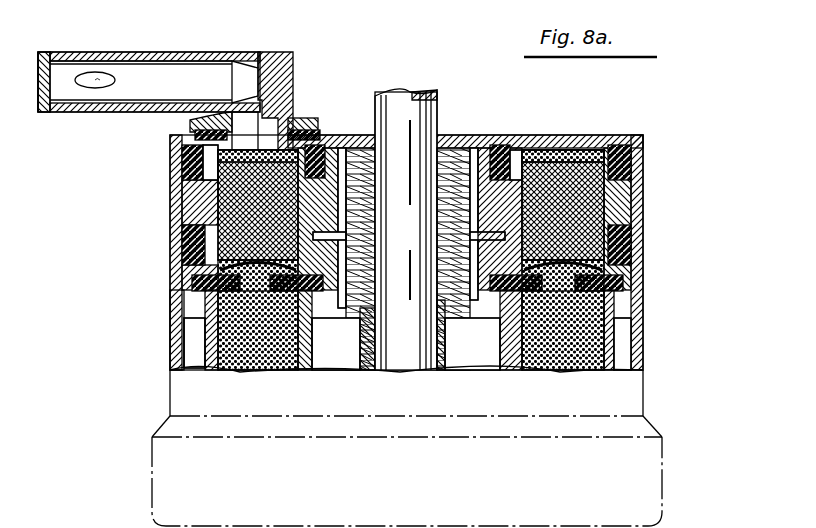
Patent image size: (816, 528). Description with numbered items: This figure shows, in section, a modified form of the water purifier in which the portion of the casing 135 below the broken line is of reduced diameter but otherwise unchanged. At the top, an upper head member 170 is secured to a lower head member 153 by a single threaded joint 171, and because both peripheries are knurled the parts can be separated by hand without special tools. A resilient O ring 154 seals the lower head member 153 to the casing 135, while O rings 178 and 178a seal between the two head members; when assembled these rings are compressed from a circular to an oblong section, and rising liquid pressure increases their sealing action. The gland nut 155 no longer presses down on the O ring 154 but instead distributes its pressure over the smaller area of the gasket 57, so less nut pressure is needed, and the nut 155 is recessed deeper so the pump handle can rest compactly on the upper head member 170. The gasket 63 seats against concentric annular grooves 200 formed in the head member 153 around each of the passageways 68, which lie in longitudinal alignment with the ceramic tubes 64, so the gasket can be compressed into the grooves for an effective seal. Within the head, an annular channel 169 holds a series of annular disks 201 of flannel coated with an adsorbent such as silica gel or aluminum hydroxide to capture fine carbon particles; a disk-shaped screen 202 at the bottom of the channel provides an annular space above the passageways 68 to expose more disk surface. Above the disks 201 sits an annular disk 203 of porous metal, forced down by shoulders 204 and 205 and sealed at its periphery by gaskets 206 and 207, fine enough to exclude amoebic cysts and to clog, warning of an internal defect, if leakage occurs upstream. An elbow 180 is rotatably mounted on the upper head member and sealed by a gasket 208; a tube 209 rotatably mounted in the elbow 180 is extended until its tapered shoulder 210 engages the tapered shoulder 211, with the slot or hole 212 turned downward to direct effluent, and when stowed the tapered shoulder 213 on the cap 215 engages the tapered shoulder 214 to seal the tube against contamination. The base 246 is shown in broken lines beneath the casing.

The gasket 57 is at (345, 310).
The gasket 63 is at (192, 338).
The ceramic tubes 64 is at (508, 338).
The passageways 68 is at (256, 290).
The casing 135 is at (641, 362).
The lower head member 153 is at (175, 206).
The resilient O ring 154 is at (182, 258).
The gland nut 155 is at (342, 145).
The annular channel 169 is at (640, 212).
The upper head member 170 is at (178, 162).
The threaded joint 171 is at (476, 145).
The O ring 178 is at (178, 182).
The O ring 178a is at (320, 135).
The elbow 180 is at (150, 55).
The concentric annular grooves 200 is at (643, 276).
The annular disks 201 is at (640, 226).
The disk-shaped screen 202 is at (175, 318).
The annular disk of porous metal 203 is at (565, 150).
The shoulder 204 is at (535, 126).
The shoulder 205 is at (590, 150).
The gasket 206 is at (528, 192).
The gasket 207 is at (594, 218).
The gasket 208 is at (192, 130).
The tube 209 is at (178, 85).
The tapered shoulder 210 is at (246, 62).
The tapered shoulder 211 is at (232, 63).
The slot or hole 212 is at (92, 76).
The tapered shoulder 213 is at (50, 40).
The tapered shoulder 214 is at (58, 58).
The cap 215 is at (40, 98).
The base 246 is at (124, 527).